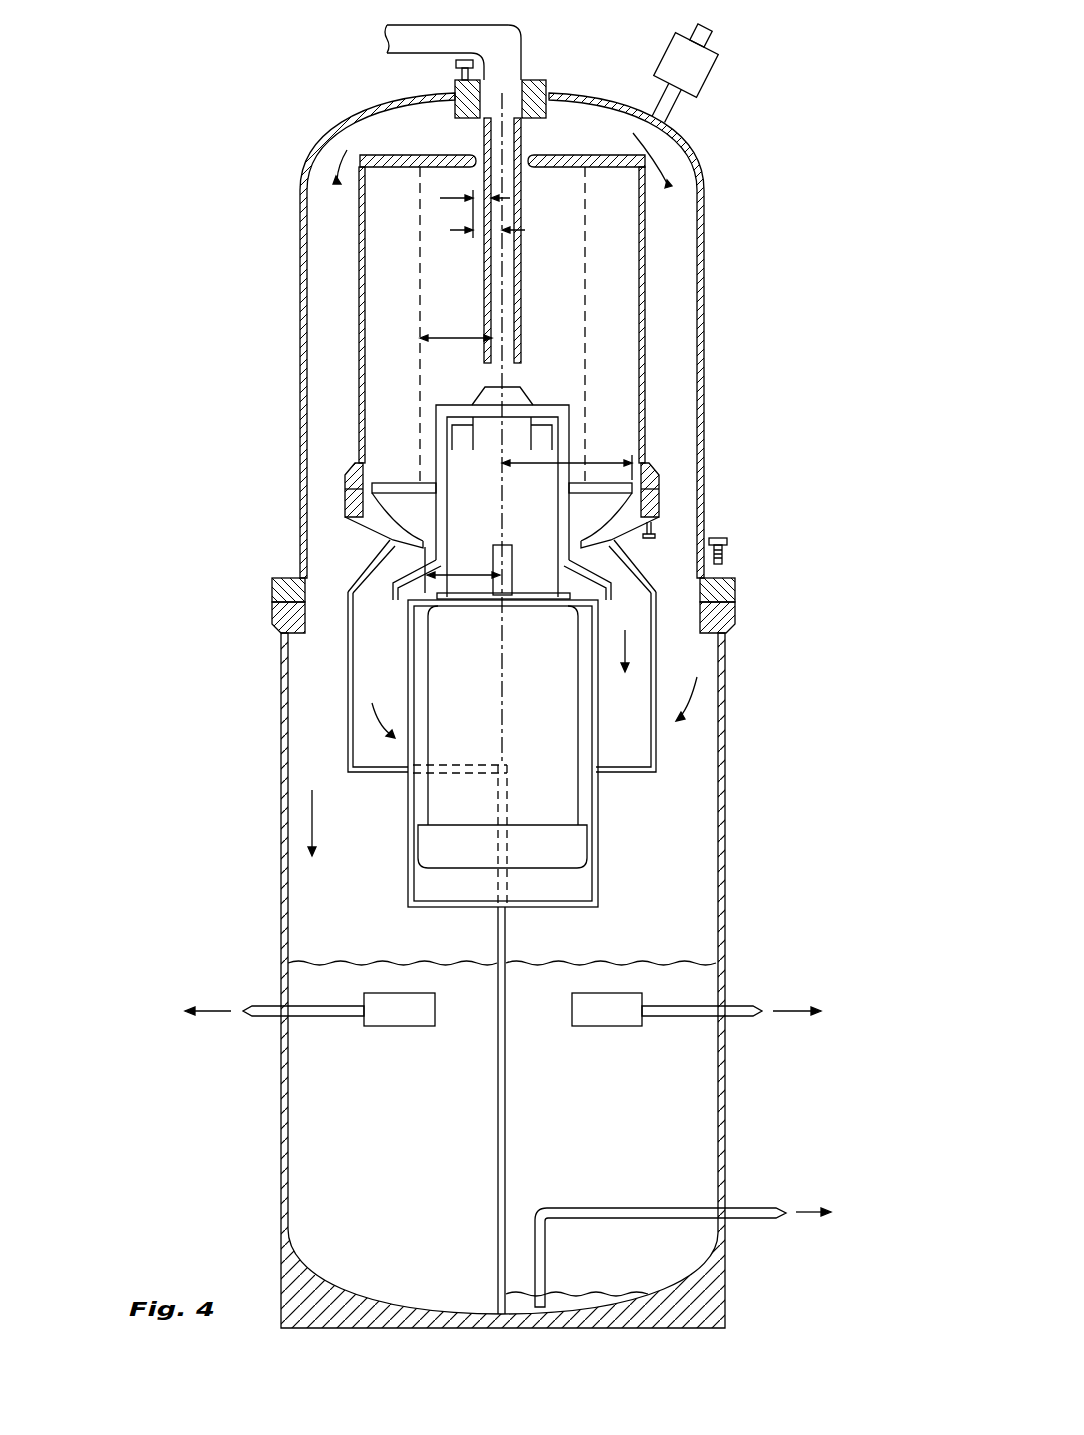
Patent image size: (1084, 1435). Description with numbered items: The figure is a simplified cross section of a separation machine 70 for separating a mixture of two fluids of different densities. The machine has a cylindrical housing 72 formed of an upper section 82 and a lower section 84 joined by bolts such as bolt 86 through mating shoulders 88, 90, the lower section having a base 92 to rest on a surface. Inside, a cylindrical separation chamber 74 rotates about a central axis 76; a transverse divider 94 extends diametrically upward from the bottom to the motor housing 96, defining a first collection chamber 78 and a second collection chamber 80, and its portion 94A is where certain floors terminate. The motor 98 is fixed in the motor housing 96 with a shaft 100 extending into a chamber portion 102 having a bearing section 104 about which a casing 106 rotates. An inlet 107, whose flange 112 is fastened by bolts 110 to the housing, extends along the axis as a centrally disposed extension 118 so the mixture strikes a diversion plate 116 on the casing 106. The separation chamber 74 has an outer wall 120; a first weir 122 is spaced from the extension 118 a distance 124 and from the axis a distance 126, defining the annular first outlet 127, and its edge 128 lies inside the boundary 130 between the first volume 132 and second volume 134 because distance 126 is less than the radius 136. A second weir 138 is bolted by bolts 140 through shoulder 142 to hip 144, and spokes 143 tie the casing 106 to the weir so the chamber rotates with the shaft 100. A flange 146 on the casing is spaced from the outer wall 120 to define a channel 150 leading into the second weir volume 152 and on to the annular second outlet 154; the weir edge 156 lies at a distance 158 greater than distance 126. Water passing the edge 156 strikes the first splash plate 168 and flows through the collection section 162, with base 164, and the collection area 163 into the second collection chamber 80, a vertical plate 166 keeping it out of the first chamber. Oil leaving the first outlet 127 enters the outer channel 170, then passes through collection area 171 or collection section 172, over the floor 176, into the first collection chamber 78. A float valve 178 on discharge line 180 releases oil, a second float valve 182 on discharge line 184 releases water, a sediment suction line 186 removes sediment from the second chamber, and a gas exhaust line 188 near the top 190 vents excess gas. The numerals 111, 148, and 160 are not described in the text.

The separation machine 70 is at (205, 342).
The cylindrical housing 72 is at (300, 190).
The cylindrical separation chamber 74 is at (384, 209).
The central axis 76 is at (572, 108).
The first collection chamber 78 is at (376, 1144).
The second collection chamber 80 is at (593, 1139).
The upper section 82 is at (705, 363).
The lower section 84 is at (730, 805).
The bolt 86 is at (727, 552).
The shoulder 88 is at (735, 590).
The shoulder 90 is at (735, 618).
The base 92 is at (565, 1306).
The transverse divider 94 is at (507, 1107).
The portion of the transverse divider 94A is at (508, 810).
The motor housing 96 is at (600, 828).
The motor 98 is at (454, 746).
The shaft 100 is at (513, 572).
The chamber portion 102 is at (420, 420).
The bearing section 104 is at (486, 518).
The casing 106 is at (560, 398).
The inlet 107 is at (521, 62).
The bolt 110 is at (455, 63).
The weld joint 111 is at (445, 97).
The flange 112 is at (455, 88).
The diversion plate 116 is at (510, 390).
The extension 118 is at (521, 272).
The outer wall 120 is at (645, 240).
The first weir 122 is at (562, 156).
The distance 124 is at (466, 205).
The distance 126 is at (452, 234).
The first outlet 127 is at (478, 156).
The edge 128 is at (521, 172).
The boundary 130 is at (420, 272).
The first volume 132 is at (437, 322).
The second volume 134 is at (373, 322).
The radius 136 is at (472, 344).
The second weir 138 is at (650, 538).
The bolt 140 is at (657, 527).
The shoulder 142 is at (662, 492).
The spoke 143 is at (345, 480).
The hip 144 is at (700, 478).
The flange 146 is at (360, 463).
The radial distance 148 is at (600, 462).
The channel 150 is at (640, 480).
The second weir volume 152 is at (570, 521).
The second outlet 154 is at (372, 493).
The edge 156 is at (390, 546).
The distance 158 is at (460, 580).
The right skirt 160 is at (605, 570).
The collection section 162 is at (378, 677).
The collection area 163 is at (658, 745).
The base 164 is at (376, 774).
The vertical plate 166 is at (347, 747).
The first splash plate 168 is at (368, 572).
The outer channel 170 is at (328, 325).
The collection area 171 is at (318, 672).
The collection section 172 is at (685, 664).
The floor 176 is at (668, 774).
The float valve 178 is at (397, 1027).
The discharge line 180 is at (320, 1017).
The second float valve 182 is at (617, 1027).
The discharge line 184 is at (746, 1010).
The sediment suction line 186 is at (613, 1207).
The gas exhaust line 188 is at (680, 108).
The top 190 is at (549, 100).